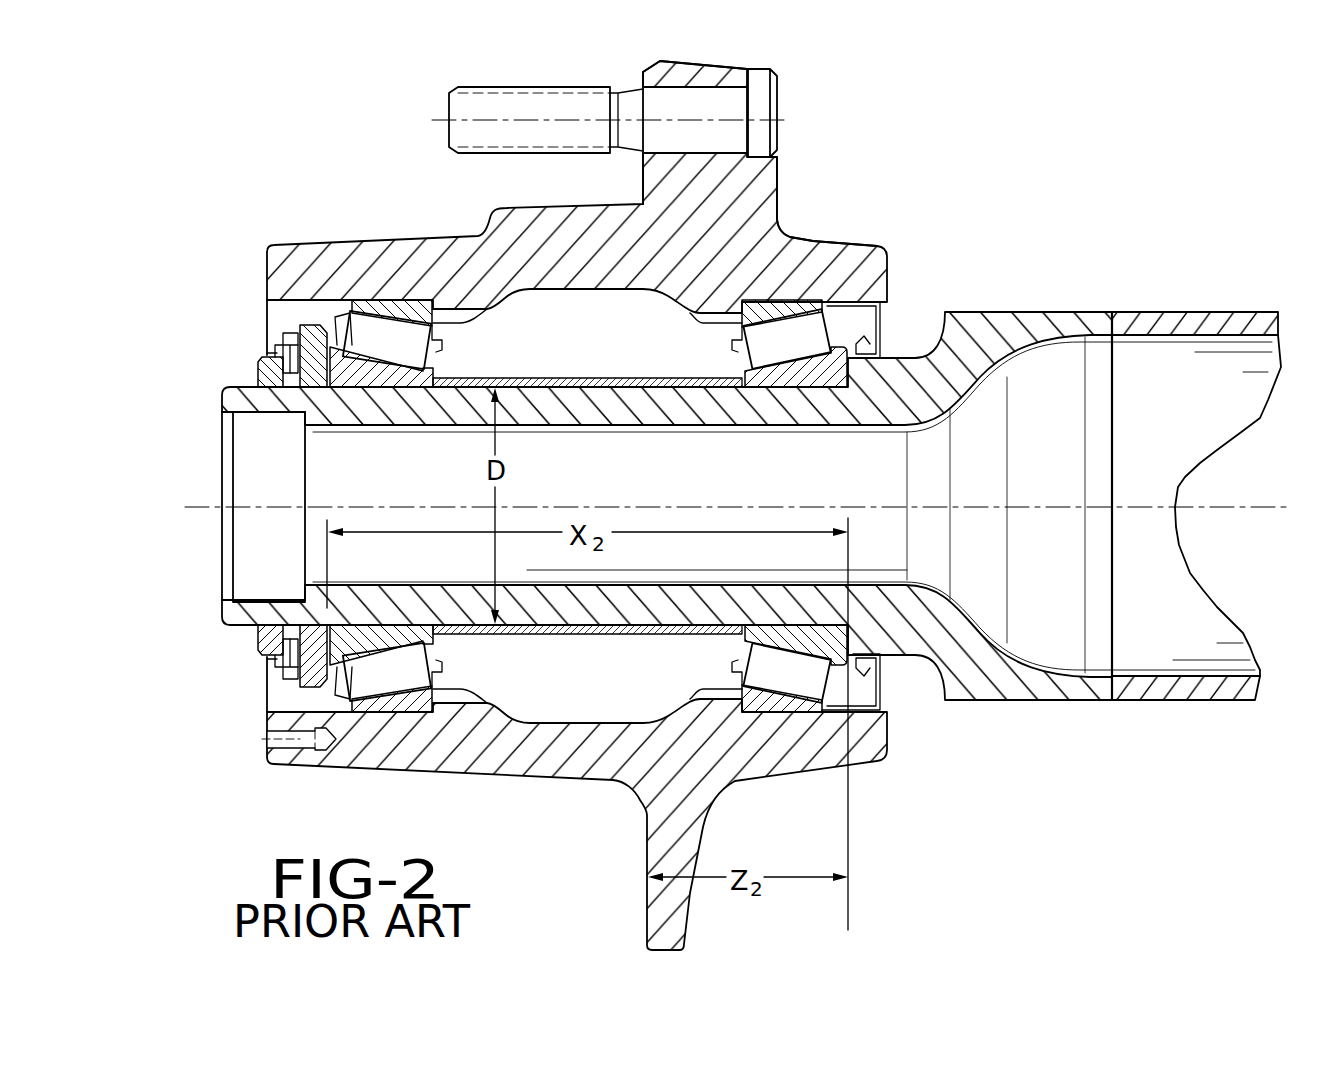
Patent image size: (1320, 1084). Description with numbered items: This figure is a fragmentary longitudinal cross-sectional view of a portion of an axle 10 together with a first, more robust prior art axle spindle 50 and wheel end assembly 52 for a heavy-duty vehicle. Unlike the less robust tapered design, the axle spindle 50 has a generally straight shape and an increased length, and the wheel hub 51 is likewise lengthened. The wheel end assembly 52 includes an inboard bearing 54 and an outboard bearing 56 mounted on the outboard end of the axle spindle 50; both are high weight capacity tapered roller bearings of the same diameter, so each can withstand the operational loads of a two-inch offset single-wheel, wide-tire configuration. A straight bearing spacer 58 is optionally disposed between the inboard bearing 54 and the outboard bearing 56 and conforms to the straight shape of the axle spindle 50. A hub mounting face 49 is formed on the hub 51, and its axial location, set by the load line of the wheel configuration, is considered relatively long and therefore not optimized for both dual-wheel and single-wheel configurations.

The axle 10 is at (1210, 300).
The hub mounting face 49 is at (641, 80).
The axle spindle 50 is at (228, 620).
The wheel hub 51 is at (345, 244).
The wheel end assembly 52 is at (818, 232).
The inboard bearing 54 is at (797, 372).
The outboard bearing 56 is at (378, 378).
The bearing spacer 58 is at (622, 378).